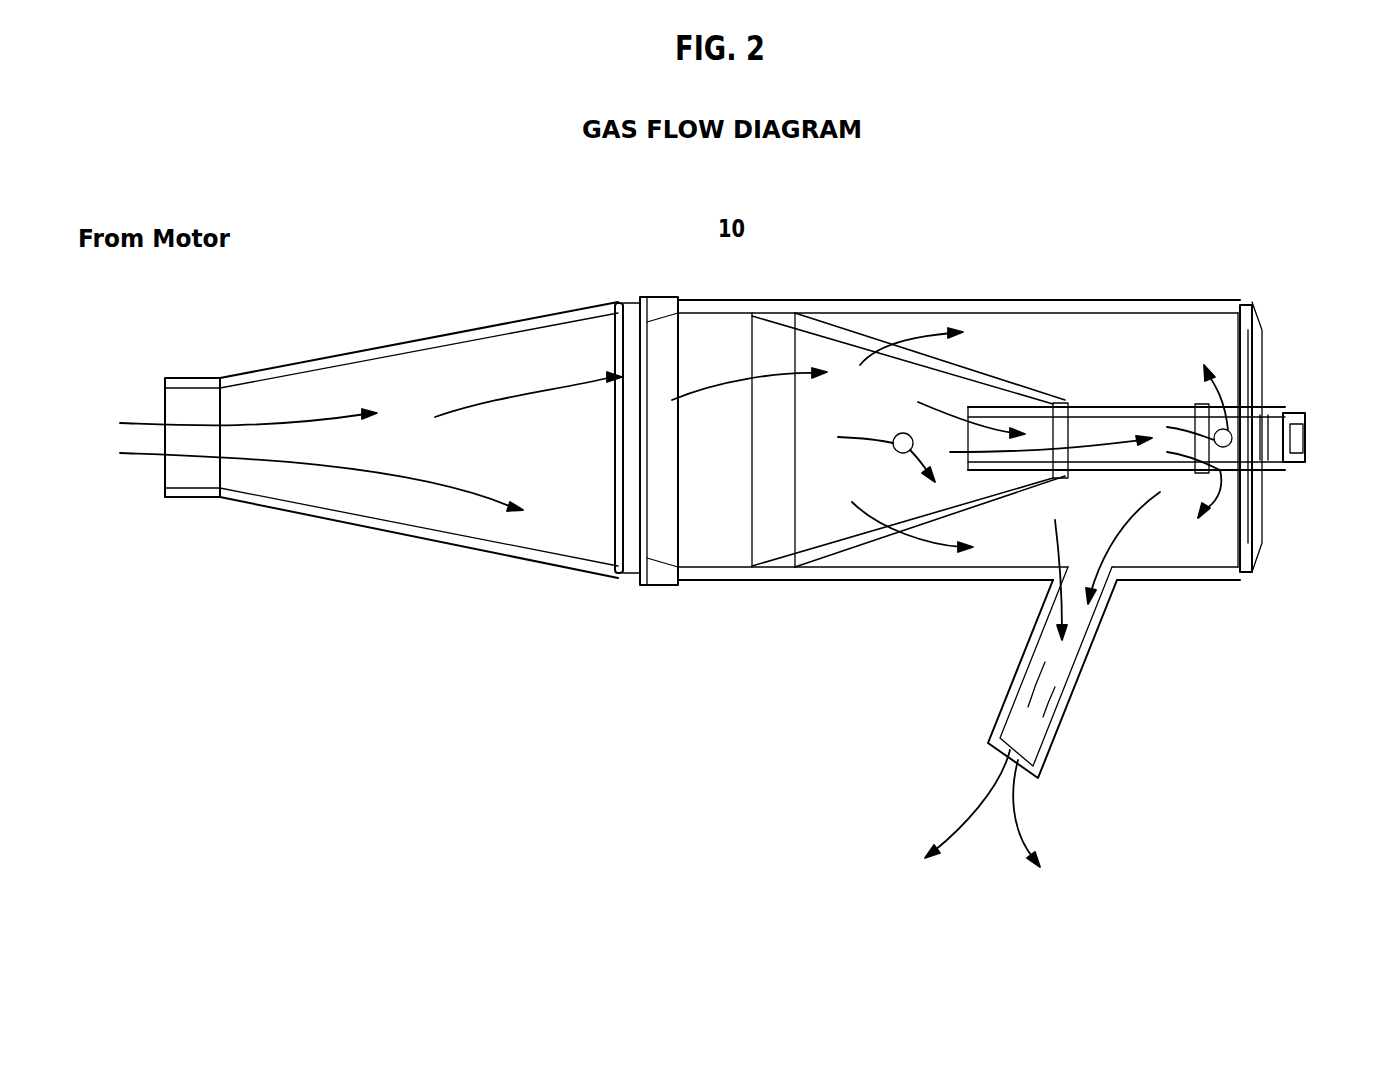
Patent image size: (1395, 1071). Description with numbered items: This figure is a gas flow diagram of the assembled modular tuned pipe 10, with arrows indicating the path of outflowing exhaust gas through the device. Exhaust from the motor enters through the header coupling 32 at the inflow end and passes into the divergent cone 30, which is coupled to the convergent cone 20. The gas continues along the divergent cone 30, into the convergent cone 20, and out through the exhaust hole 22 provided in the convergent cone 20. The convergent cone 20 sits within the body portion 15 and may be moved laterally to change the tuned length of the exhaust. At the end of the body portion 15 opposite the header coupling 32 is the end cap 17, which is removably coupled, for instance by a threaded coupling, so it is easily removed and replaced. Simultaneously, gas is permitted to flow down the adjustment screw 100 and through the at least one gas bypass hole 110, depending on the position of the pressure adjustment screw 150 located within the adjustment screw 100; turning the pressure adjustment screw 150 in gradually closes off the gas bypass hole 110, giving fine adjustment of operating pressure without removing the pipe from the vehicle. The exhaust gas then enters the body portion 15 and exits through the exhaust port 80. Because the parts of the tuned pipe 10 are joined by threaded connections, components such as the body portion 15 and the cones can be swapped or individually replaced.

The modular tuned pipe 10 is at (927, 441).
The body portion 15 is at (952, 300).
The end cap 17 is at (1255, 322).
The convergent cone 20 is at (1028, 388).
The exhaust hole 22 is at (898, 434).
The divergent cone 30 is at (345, 333).
The header coupling 32 is at (177, 368).
The exhaust port 80 is at (1070, 718).
The adjustment screw 100 is at (1150, 472).
The gas bypass hole 110 is at (1216, 430).
The pressure adjustment screw 150 is at (1293, 463).